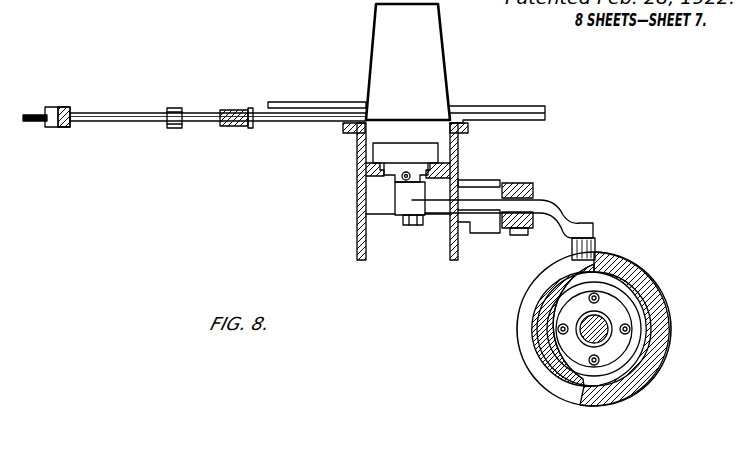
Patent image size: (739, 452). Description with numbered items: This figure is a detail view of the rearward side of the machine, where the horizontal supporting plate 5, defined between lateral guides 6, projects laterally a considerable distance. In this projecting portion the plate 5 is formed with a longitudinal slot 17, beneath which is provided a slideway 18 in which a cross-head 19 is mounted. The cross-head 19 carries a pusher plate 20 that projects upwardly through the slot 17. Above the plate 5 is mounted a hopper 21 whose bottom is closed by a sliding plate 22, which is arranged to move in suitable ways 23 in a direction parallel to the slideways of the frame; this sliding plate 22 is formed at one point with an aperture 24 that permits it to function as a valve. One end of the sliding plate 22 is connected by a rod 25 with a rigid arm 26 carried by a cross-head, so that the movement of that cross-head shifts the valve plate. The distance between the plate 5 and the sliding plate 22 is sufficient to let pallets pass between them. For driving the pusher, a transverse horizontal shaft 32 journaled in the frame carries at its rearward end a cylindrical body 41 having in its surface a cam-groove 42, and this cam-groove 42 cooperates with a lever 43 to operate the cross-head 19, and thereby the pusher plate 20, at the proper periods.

The supporting plate 5 is at (357, 157).
The lateral guides 6 is at (353, 142).
The longitudinal slot 17 is at (428, 152).
The slideway 18 is at (357, 180).
The cross-head 19 is at (460, 170).
The pusher plate 20 is at (405, 162).
The hopper 21 is at (373, 62).
The sliding plate 22 is at (406, 118).
The ways 23 is at (536, 106).
The aperture 24 is at (267, 122).
The rod 25 is at (134, 116).
The rigid arm 26 is at (77, 98).
The transverse horizontal shaft 32 is at (610, 326).
The cylindrical body 41 is at (657, 281).
The cam-groove 42 is at (527, 305).
The lever 43 is at (547, 209).